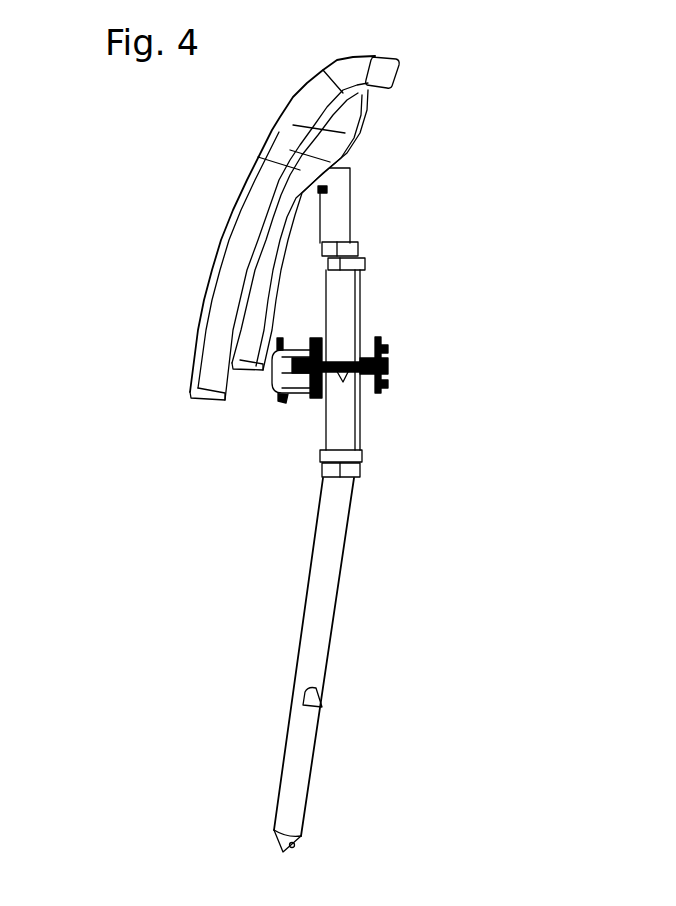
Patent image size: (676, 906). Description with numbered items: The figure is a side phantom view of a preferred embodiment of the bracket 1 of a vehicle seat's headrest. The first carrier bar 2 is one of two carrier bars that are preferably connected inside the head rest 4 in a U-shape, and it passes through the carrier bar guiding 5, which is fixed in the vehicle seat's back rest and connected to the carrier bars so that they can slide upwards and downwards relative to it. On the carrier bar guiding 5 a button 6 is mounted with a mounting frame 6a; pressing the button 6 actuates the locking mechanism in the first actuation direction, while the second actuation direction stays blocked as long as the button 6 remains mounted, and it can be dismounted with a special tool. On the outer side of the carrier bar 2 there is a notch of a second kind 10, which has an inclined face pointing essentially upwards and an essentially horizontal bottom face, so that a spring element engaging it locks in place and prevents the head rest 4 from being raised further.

The bracket 1 is at (440, 287).
The first carrier bar 2 is at (300, 755).
The head rest 4 is at (235, 262).
The carrier bar guiding 5 is at (362, 433).
The button 6 is at (277, 380).
The mounting frame 6a is at (280, 405).
The notch of a second kind 10 is at (330, 690).